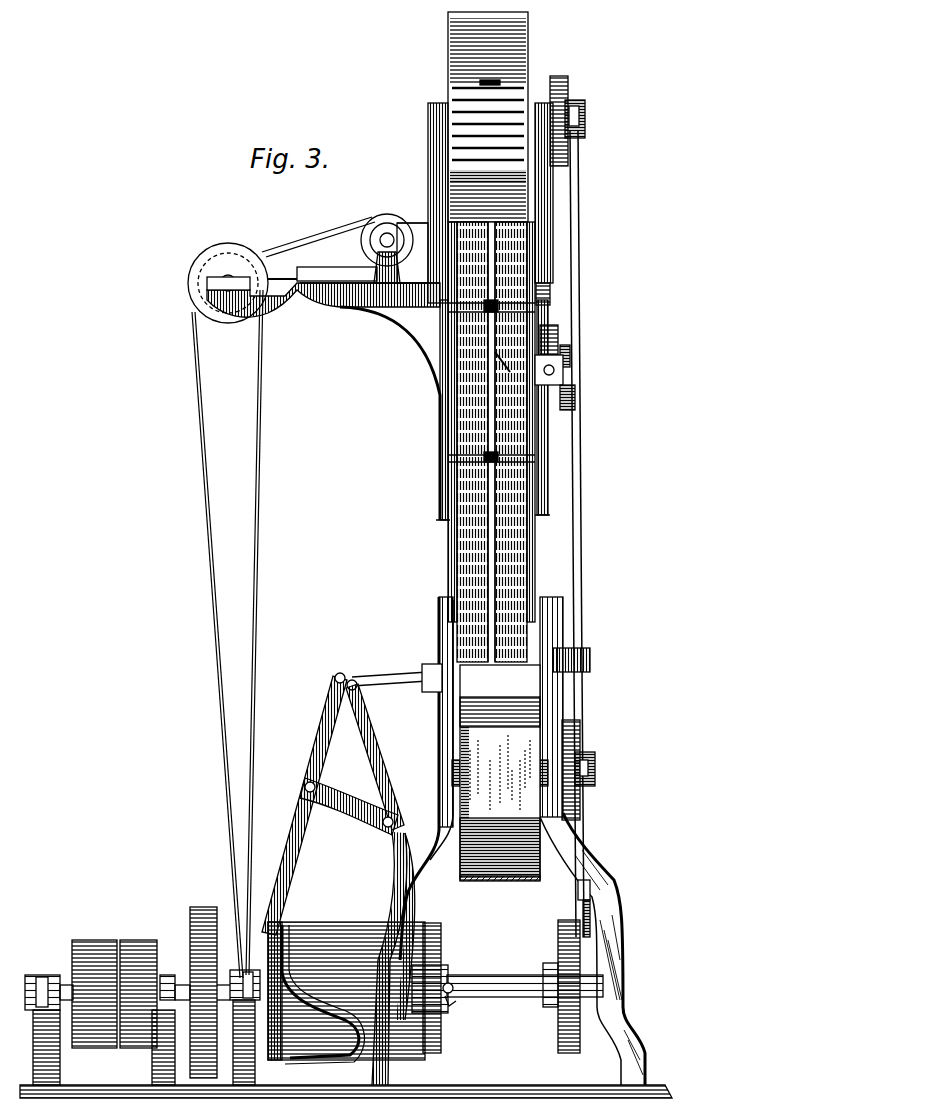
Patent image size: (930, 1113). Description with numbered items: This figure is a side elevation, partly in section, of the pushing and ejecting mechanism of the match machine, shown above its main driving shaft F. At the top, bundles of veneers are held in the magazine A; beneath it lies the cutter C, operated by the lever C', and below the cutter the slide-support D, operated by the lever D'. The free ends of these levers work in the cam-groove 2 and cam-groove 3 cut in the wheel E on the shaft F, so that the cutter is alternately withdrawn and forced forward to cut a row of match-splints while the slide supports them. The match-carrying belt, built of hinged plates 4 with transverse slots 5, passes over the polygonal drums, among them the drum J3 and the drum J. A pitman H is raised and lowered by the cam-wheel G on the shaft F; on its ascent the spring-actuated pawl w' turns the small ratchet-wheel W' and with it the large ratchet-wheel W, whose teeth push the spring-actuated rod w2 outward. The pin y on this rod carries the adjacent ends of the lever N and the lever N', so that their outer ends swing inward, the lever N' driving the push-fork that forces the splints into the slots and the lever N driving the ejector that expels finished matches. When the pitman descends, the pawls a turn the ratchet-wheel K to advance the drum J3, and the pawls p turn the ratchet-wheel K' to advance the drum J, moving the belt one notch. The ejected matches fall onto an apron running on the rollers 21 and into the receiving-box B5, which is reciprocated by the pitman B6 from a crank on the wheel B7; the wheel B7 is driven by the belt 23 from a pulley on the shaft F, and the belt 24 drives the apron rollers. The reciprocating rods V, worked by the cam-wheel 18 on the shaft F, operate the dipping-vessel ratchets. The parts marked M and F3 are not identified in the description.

The hinged plates 4 is at (545, 61).
The transverse slots 5 is at (528, 547).
The lever N' is at (540, 524).
The lever N is at (445, 410).
The ratchet-wheel K is at (572, 110).
The pawls a is at (580, 102).
The polygonal drum J3 is at (550, 209).
The pitman H is at (580, 562).
The small ratchet-wheel W' is at (577, 330).
The spring-actuated rod w2 is at (570, 348).
The large ratchet-wheel W is at (583, 366).
The spring-actuated pawl w' is at (587, 395).
The pin y is at (503, 368).
The wheel B7 is at (198, 300).
The pitman B6 is at (300, 281).
The receiving-box B5 is at (348, 265).
The belt 24 is at (297, 236).
The roller M is at (375, 220).
The rollers 21 is at (388, 233).
The magazine A is at (416, 250).
The belt 23 is at (256, 492).
The polygonal drum J is at (500, 773).
The ratchet-wheel K' is at (598, 765).
The pawls p is at (595, 765).
The slide-support D is at (394, 683).
The lever D' is at (380, 757).
The lever C' is at (304, 804).
The cutter C is at (357, 866).
The wheel E is at (345, 921).
The cam-groove 2 is at (284, 952).
The shaft F is at (480, 971).
The cam-groove 3 is at (438, 988).
The reciprocating rods V is at (456, 1004).
The cam-wheel G is at (560, 931).
The pulleys F3 is at (114, 980).
The cam-wheel 18 is at (432, 1055).